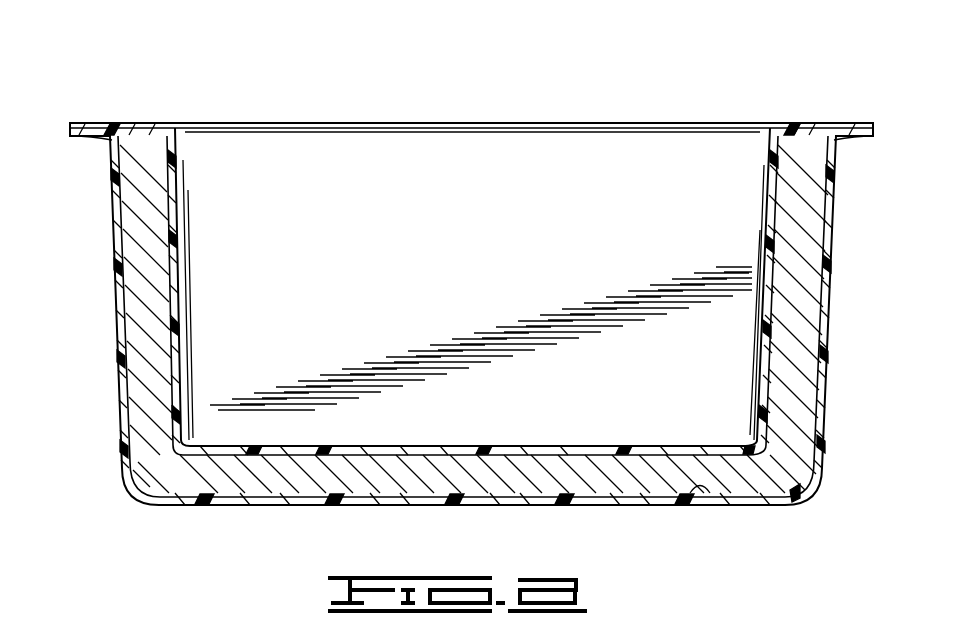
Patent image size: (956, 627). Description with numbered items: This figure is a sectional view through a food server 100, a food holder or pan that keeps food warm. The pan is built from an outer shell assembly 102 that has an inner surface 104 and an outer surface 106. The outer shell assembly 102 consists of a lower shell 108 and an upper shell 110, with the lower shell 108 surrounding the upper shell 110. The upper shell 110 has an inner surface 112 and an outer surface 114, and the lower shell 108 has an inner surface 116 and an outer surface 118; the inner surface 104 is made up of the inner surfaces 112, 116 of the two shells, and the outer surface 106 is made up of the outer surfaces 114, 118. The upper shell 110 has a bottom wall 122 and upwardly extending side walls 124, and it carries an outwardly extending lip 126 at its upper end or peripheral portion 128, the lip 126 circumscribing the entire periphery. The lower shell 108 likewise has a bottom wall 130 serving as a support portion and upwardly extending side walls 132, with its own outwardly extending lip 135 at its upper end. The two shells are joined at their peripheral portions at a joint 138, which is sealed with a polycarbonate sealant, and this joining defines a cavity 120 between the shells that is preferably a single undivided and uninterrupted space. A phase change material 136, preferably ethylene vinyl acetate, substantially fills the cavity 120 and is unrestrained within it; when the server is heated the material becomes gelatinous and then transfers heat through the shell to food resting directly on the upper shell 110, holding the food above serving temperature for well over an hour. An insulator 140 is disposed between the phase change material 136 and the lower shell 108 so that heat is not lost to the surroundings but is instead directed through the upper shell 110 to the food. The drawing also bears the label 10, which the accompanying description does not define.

The food server 100 is at (327, 108).
The outer shell assembly 102 is at (120, 330).
The inner surface 104 is at (93, 128).
The outer surface 106 is at (126, 412).
The lower shell 108 is at (122, 265).
The upper shell 110 is at (303, 450).
The inner surface 112 is at (285, 505).
The outer surface 114 is at (408, 450).
The inner surface 116 is at (565, 502).
The outer surface 118 is at (457, 504).
The cavity 120 is at (795, 470).
The bottom wall 122 is at (612, 450).
The side walls 124 is at (758, 358).
The outwardly extending lip 126 is at (795, 128).
The peripheral portion 128 is at (110, 128).
The bottom wall 130 is at (200, 505).
The side walls 132 is at (118, 203).
The outwardly extending lip 135 is at (92, 138).
The phase change material 136 is at (800, 300).
The joint 138 is at (848, 137).
The insulator 140 is at (125, 380).
The liner 10 is at (172, 395).